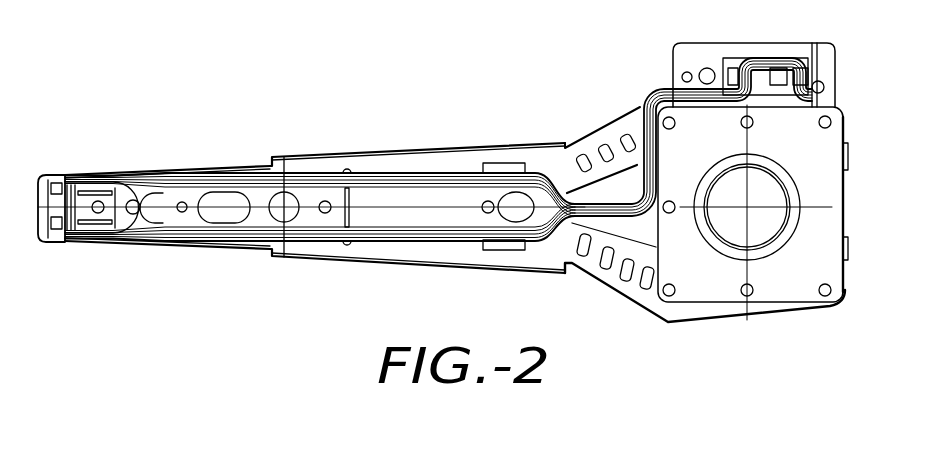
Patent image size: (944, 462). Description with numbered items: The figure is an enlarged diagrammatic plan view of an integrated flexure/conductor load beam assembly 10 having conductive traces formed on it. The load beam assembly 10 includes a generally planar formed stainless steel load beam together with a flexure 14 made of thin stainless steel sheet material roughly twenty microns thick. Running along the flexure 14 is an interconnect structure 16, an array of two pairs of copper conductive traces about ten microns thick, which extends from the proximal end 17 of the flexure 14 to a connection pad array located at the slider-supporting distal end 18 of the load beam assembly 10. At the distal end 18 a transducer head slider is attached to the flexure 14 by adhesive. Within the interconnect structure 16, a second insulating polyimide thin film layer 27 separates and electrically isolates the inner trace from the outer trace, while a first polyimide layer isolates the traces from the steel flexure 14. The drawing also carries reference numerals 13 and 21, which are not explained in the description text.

The load beam assembly 10 is at (236, 299).
The alignment holes 13 is at (183, 214).
The flexure 14 is at (381, 172).
The interconnect structure 16 is at (605, 218).
The proximal end 17 is at (842, 220).
The distal end 18 is at (75, 170).
The housing base plate 21 is at (787, 285).
The second insulating polyimide thin film layer 27 is at (782, 72).